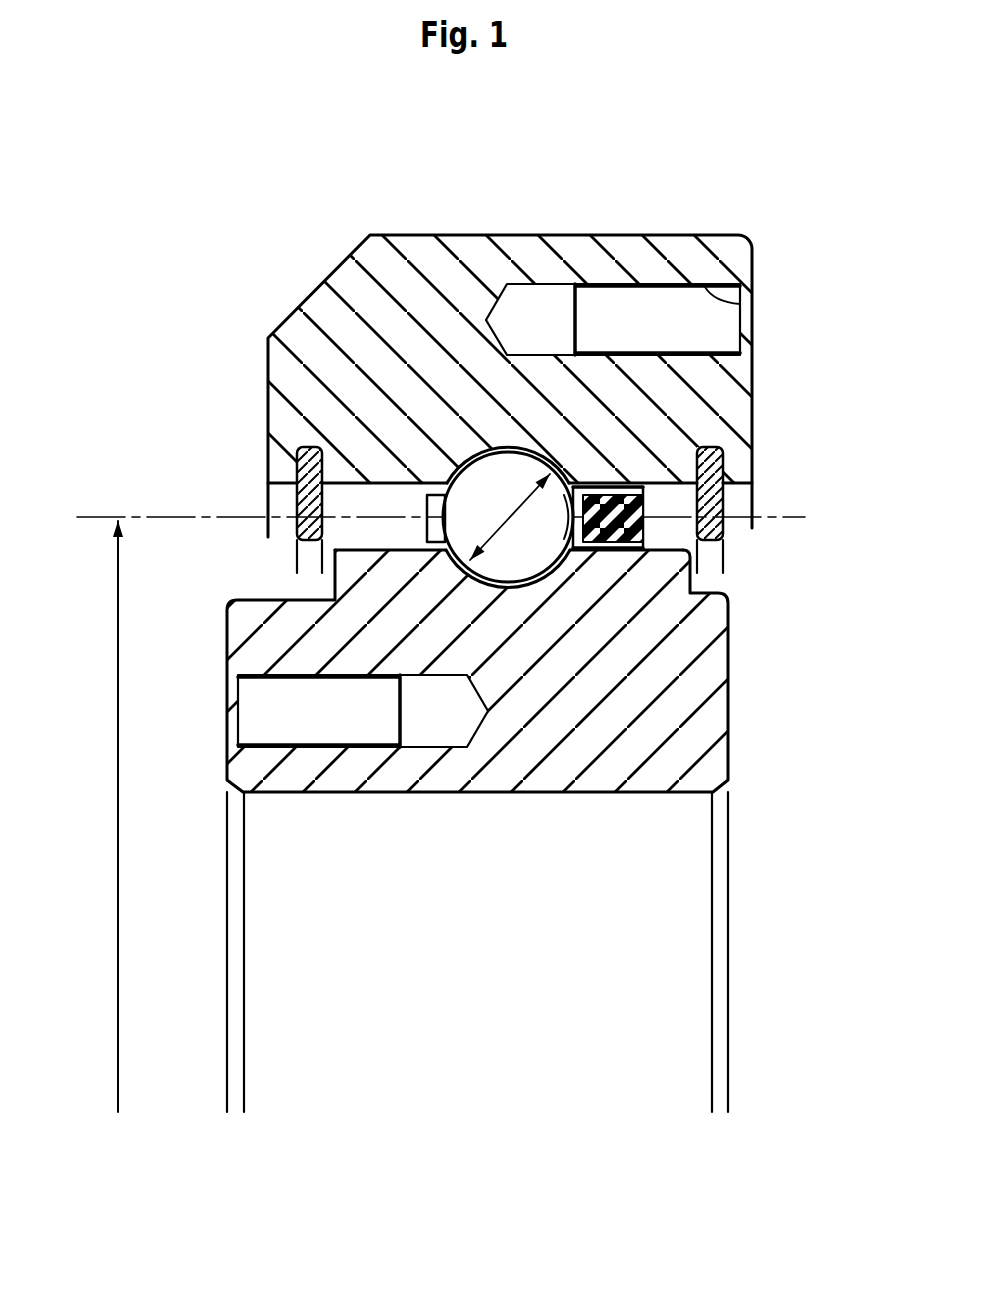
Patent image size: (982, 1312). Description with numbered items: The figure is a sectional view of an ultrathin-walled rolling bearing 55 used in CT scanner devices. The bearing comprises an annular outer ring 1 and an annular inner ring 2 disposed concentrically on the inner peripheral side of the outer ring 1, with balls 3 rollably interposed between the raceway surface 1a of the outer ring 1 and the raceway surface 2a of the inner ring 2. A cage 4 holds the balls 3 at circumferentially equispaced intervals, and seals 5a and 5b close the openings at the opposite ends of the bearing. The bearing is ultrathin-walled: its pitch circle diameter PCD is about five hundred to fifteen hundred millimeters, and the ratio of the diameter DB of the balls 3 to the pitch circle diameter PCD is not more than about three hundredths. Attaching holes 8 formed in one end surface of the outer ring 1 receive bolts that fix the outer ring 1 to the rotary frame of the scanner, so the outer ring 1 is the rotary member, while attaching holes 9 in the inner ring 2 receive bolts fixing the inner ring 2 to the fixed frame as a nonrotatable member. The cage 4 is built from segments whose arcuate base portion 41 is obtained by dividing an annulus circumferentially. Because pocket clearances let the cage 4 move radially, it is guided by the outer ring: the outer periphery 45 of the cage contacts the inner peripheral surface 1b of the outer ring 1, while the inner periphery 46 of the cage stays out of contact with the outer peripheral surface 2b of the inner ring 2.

The ultrathin-walled rolling bearing 55 is at (195, 360).
The outer ring 1 is at (333, 268).
The raceway surface of the outer ring 1a is at (510, 460).
The inner peripheral surface of the outer ring 1b is at (408, 485).
The attaching holes 8 is at (745, 300).
The inner ring 2 is at (735, 737).
The raceway surface of the inner ring 2a is at (489, 568).
The outer peripheral surface of the inner ring 2b is at (371, 553).
The attaching holes 9 is at (265, 745).
The balls 3 is at (541, 558).
The cage 4 is at (633, 550).
The base portion 41 is at (640, 495).
The outer periphery of the cage 45 is at (600, 495).
The inner periphery of the cage 46 is at (598, 548).
The seal 5a is at (733, 528).
The seal 5b is at (290, 528).
The diameter of the balls DB is at (503, 517).
The pitch circle diameter PCD is at (99, 816).